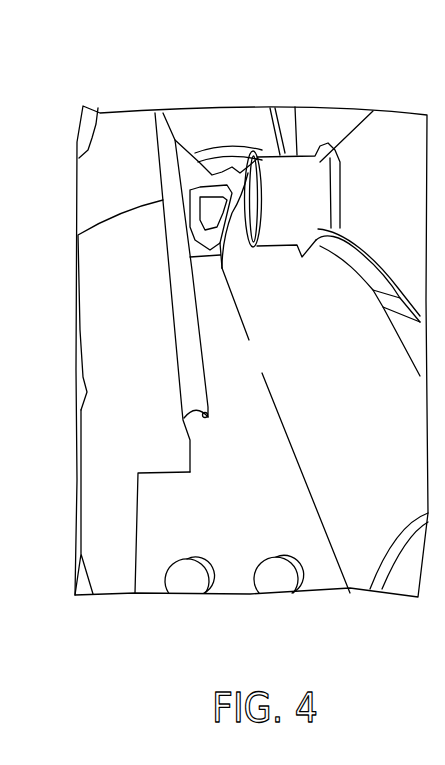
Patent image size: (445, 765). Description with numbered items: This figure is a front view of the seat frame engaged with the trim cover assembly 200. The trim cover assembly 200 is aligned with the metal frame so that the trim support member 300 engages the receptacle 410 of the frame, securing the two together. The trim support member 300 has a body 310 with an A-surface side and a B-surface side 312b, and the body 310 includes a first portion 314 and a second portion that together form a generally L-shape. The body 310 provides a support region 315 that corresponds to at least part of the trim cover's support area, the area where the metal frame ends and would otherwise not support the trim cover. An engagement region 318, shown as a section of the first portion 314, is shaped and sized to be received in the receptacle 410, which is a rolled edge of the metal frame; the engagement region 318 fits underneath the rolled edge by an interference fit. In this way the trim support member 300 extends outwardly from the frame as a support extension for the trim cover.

The trim cover assembly 200 is at (284, 240).
The trim support member 300 is at (156, 489).
The body 310 is at (212, 526).
The B-surface side 312b is at (272, 508).
The first portion 314 is at (268, 371).
The support region 315 is at (254, 419).
The engagement region 318 is at (228, 307).
The receptacle 410 is at (160, 348).